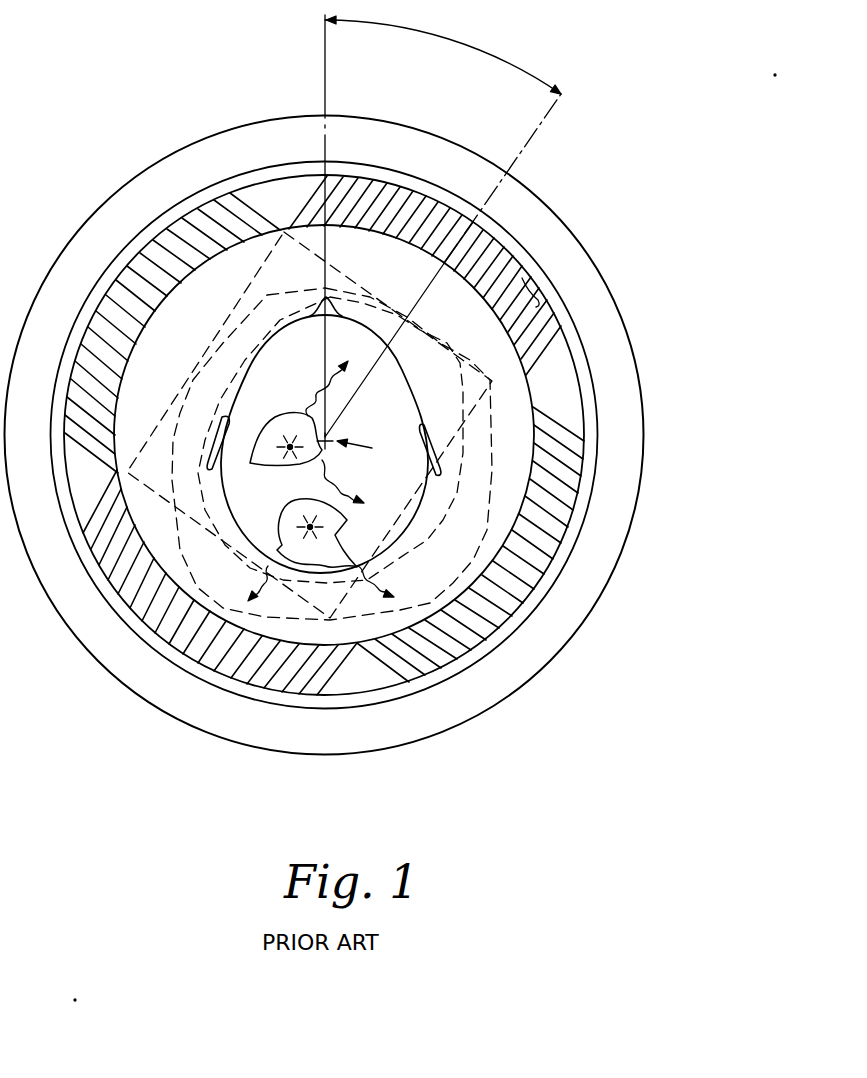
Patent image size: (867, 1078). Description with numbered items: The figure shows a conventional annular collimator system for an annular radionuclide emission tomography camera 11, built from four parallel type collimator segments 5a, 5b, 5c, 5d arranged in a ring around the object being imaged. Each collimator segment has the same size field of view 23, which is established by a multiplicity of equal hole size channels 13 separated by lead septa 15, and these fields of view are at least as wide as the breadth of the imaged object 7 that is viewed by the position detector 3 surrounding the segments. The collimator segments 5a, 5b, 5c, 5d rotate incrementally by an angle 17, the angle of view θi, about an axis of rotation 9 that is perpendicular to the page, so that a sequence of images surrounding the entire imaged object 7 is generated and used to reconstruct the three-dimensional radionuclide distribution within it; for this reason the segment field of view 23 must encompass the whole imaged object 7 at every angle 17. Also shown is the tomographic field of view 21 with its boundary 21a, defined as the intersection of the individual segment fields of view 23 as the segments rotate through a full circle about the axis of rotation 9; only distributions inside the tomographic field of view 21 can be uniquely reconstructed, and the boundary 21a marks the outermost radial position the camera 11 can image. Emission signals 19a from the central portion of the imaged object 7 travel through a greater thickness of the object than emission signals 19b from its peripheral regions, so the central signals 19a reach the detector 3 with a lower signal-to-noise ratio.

The annular radionuclide emission tomography camera 11 is at (106, 58).
The position detector 3 is at (212, 150).
The collimator segment 5a is at (413, 190).
The collimator segment 5b is at (550, 573).
The collimator segment 5c is at (246, 706).
The collimator segment 5d is at (115, 266).
The imaged object 7 is at (288, 385).
The axis of rotation 9 is at (353, 446).
The channels 13 is at (528, 283).
The lead septa 15 is at (545, 306).
The angle 17 is at (485, 31).
The radionuclide emission signals from the central portion 19a is at (280, 452).
The emission signals from the peripheral regions 19b is at (347, 520).
The tomographic field of view 21 is at (431, 369).
The boundary 21a is at (330, 440).
The collimator segment field of view 23 is at (196, 576).